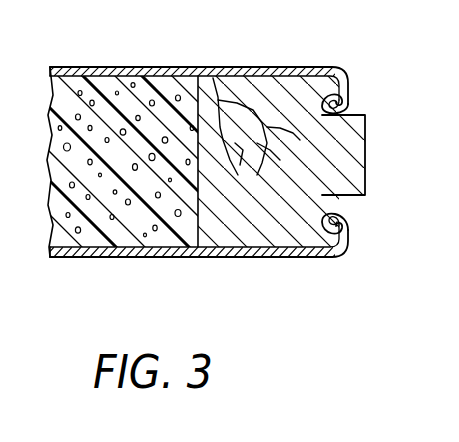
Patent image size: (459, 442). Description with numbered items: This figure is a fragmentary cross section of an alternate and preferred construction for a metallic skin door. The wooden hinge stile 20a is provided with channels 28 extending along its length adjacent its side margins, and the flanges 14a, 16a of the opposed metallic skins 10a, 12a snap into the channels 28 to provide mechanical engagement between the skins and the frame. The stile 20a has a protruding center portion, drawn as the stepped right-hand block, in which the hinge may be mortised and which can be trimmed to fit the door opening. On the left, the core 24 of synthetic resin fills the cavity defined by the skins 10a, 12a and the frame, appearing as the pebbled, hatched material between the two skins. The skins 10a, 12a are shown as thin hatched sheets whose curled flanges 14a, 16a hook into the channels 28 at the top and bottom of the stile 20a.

The metallic skin 10a is at (297, 275).
The metallic skin 12a is at (270, 67).
The flange 14a is at (352, 229).
The flange 16a is at (352, 112).
The stile 20a is at (293, 165).
The core 24 is at (112, 75).
The channel 28 is at (351, 198).